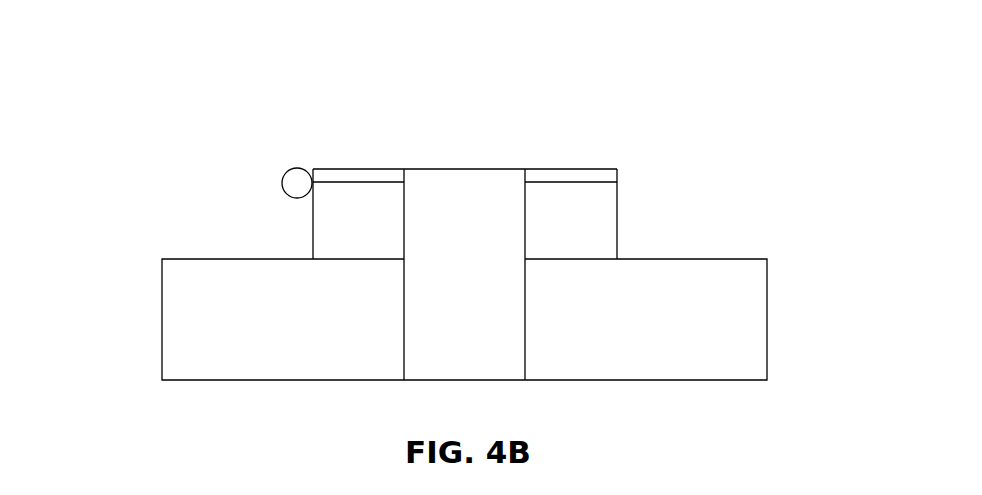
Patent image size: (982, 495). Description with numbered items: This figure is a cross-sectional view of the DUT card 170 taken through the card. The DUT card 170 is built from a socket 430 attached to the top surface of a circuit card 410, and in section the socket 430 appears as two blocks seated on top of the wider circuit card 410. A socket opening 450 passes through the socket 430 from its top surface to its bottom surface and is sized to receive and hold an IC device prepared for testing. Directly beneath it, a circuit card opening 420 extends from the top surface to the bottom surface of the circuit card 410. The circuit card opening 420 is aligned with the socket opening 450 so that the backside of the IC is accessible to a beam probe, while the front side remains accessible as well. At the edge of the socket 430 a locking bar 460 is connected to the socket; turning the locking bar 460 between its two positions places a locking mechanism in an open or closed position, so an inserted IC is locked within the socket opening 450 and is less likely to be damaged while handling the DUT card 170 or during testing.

The DUT card 170 is at (200, 153).
The circuit card 410 is at (351, 363).
The circuit card opening 420 is at (497, 380).
The socket 430 is at (618, 220).
The socket opening 450 is at (476, 178).
The locking bar 460 is at (300, 168).